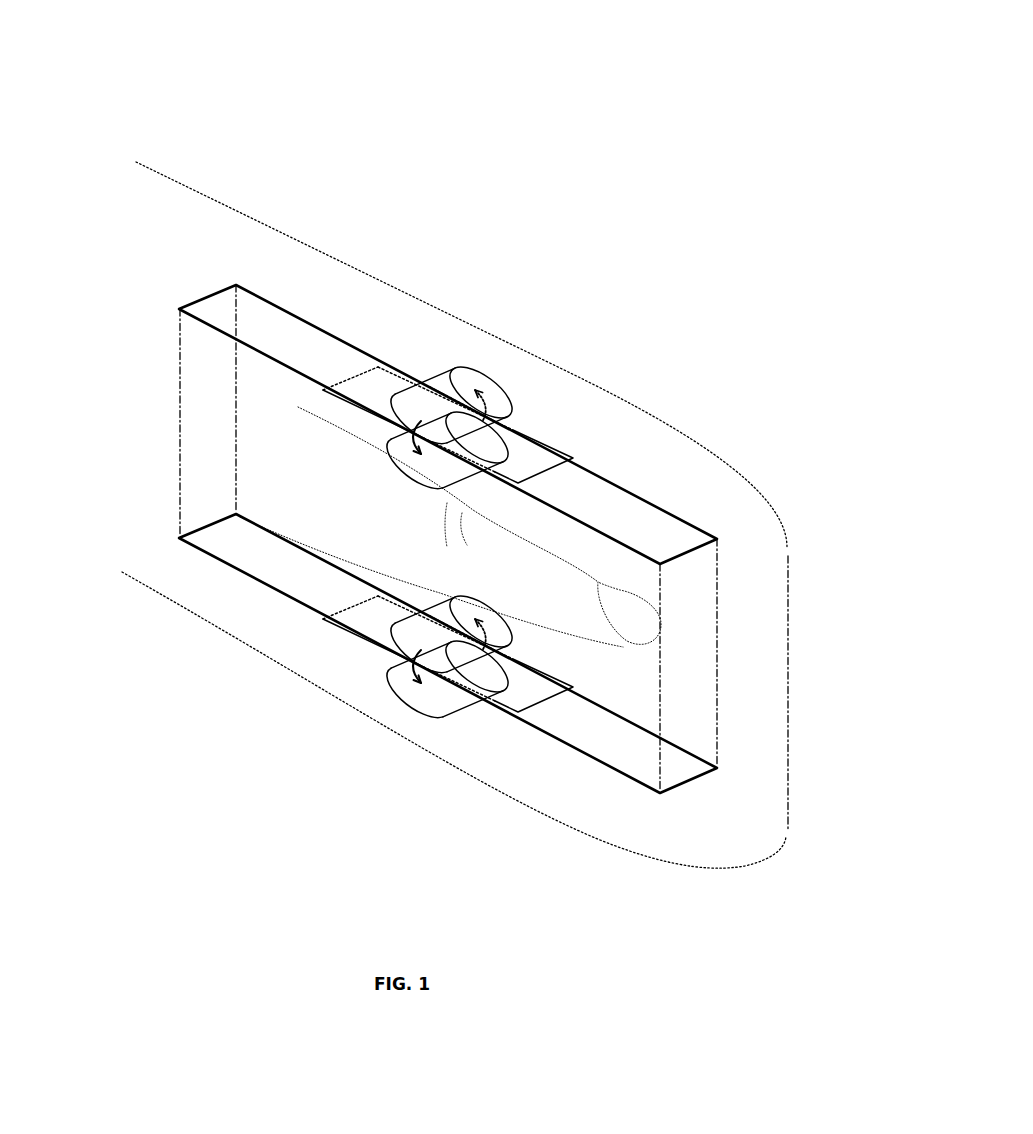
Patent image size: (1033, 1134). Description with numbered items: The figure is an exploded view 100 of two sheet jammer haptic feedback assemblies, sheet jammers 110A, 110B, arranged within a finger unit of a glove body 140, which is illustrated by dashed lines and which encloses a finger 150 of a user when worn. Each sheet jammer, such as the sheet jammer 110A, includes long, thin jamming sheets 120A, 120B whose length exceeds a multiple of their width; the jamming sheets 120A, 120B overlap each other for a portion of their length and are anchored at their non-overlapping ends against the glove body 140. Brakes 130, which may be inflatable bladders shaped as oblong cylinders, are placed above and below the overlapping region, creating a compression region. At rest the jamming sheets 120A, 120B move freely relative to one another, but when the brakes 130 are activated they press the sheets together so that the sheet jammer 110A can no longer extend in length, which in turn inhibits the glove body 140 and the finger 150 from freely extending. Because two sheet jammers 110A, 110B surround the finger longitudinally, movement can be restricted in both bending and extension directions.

The exploded view 100 is at (430, 464).
The sheet jammer 110A is at (393, 386).
The sheet jammer 110B is at (413, 586).
The jamming sheet 120A is at (335, 330).
The jamming sheet 120B is at (165, 623).
The brakes 130 is at (448, 368).
The glove body 140 is at (430, 758).
The finger 150 is at (367, 545).